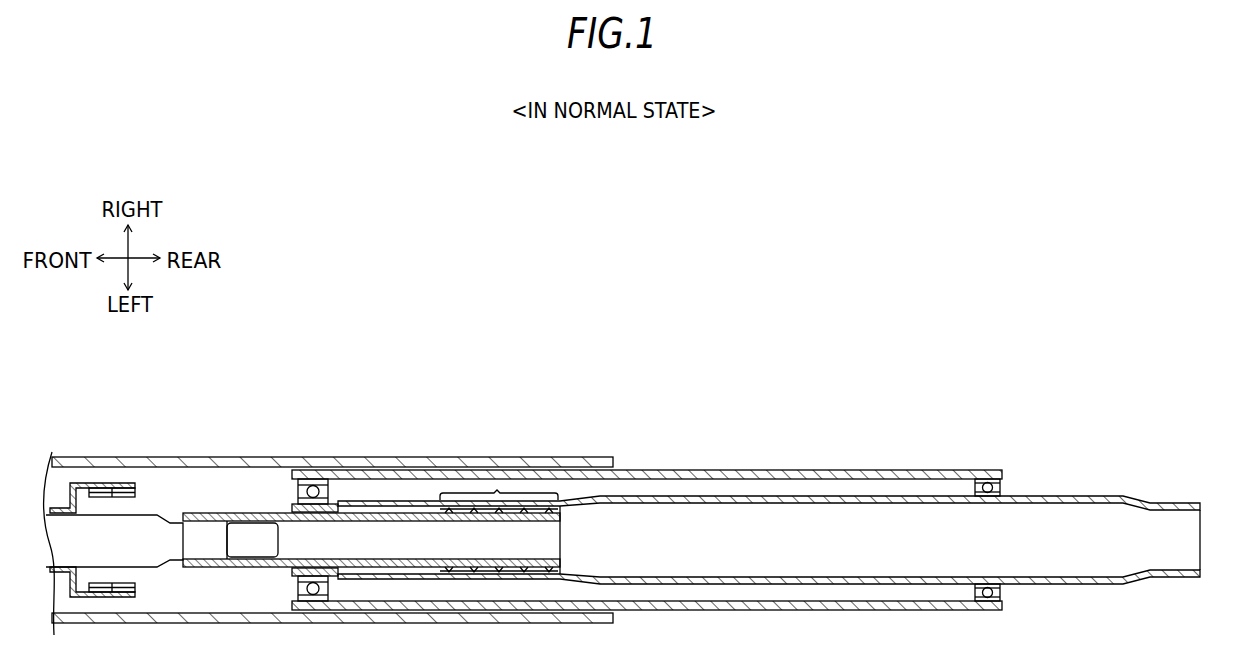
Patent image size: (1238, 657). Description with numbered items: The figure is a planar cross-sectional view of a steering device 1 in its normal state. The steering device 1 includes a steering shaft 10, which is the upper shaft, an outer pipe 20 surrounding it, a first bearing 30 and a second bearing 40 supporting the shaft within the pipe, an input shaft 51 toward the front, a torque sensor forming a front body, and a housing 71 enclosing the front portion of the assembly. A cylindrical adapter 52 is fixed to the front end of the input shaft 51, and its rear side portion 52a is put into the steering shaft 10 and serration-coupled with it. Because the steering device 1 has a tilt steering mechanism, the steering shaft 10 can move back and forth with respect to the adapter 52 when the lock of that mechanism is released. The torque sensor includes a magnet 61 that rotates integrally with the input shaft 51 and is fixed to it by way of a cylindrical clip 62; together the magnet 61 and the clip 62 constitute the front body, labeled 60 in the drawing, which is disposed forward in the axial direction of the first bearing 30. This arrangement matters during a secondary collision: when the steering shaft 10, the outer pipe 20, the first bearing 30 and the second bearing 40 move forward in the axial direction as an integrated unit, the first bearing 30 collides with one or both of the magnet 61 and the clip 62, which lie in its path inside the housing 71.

The steering device 1 is at (642, 383).
The steering shaft 10 is at (1108, 495).
The outer pipe 20 is at (812, 469).
The first bearing 30 is at (316, 480).
The second bearing 40 is at (1002, 485).
The input shaft 51 is at (150, 513).
The adapter 52 is at (203, 512).
The rear side portion 52a is at (497, 493).
The energy absorbing mechanism 60 is at (99, 491).
The magnet 61 is at (115, 498).
The clip 62 is at (92, 485).
The housing 71 is at (395, 458).